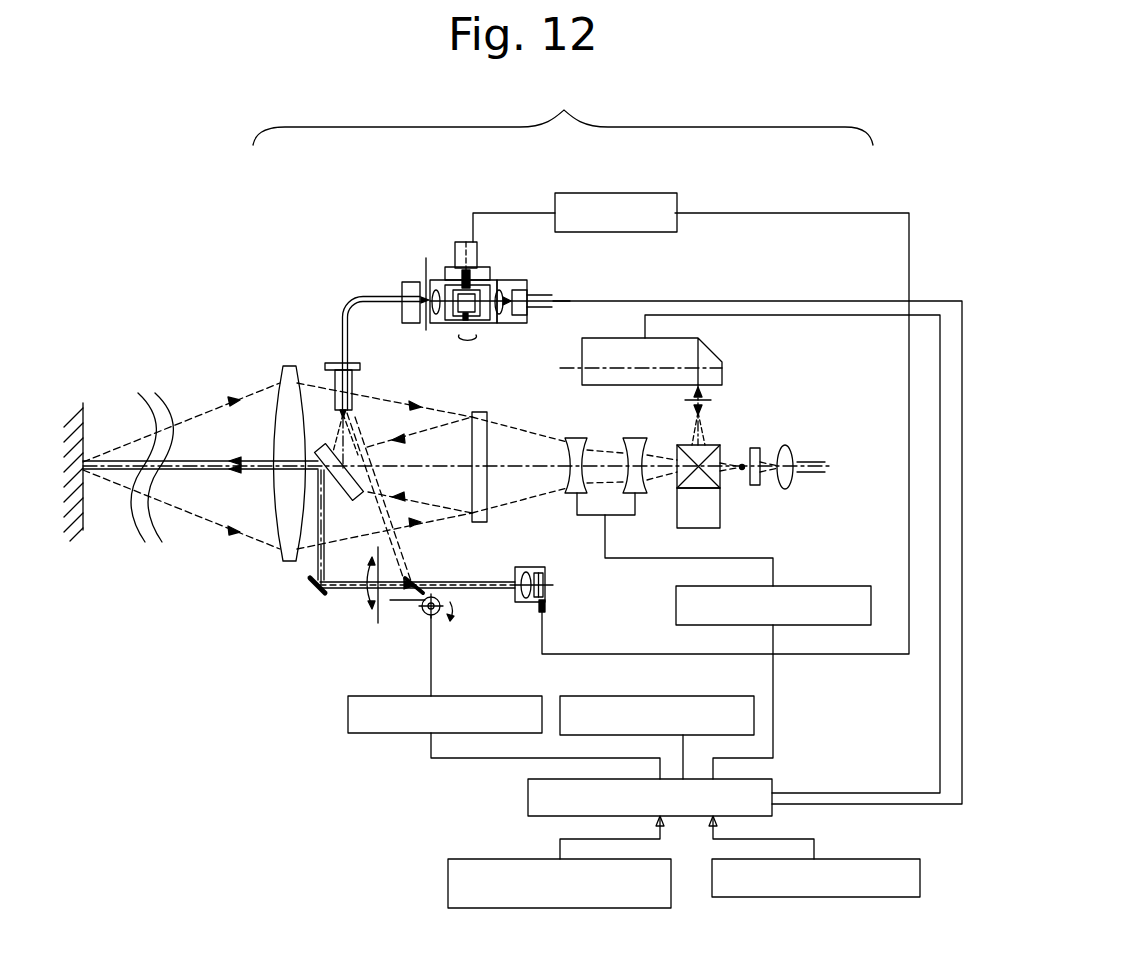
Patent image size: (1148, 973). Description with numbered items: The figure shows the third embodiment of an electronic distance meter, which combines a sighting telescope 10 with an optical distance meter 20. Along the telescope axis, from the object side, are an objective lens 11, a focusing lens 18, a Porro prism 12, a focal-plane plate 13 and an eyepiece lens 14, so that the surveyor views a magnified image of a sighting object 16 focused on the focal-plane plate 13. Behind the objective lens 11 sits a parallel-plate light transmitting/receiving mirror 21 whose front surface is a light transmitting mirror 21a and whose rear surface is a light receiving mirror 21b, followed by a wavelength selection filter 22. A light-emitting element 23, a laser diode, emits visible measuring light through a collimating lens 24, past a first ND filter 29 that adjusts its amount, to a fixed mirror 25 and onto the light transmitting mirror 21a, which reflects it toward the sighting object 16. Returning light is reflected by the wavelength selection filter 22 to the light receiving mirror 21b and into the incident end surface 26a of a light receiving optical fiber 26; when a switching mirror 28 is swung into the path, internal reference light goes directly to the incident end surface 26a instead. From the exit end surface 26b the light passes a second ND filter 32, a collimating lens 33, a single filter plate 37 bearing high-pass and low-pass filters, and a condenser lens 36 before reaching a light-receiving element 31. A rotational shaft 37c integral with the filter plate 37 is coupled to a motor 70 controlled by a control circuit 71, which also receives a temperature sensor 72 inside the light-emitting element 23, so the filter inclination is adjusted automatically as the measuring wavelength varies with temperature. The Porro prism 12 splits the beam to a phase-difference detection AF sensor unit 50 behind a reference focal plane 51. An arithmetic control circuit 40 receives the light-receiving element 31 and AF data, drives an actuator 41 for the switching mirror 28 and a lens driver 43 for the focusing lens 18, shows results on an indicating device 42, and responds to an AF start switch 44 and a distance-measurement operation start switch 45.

The sighting telescope 10 is at (563, 113).
The objective lens 11 is at (289, 365).
The Porro prism 12 is at (722, 455).
The focal-plane plate 13 is at (758, 452).
The eyepiece lens 14 is at (792, 447).
The sighting object 16 is at (86, 403).
The focusing lens 18 is at (570, 442).
The optical distance meter 20 is at (291, 303).
The light transmitting/receiving mirror 21 is at (357, 493).
The light transmitting mirror 21a is at (342, 490).
The light receiving mirror 21b is at (323, 445).
The wavelength selection filter 22 is at (479, 412).
The light-emitting element 23 is at (548, 570).
The collimating lens 24 is at (525, 567).
The fixed mirror 25 is at (312, 592).
The light receiving optical fiber 26 is at (350, 296).
The incident end surface 26a is at (352, 408).
The exit end surface 26b is at (403, 282).
The switching mirror 28 is at (420, 583).
The first ND filter 29 is at (376, 620).
The light-receiving element 31 is at (527, 288).
The second ND filter 32 is at (426, 258).
The collimating lens 33 is at (442, 323).
The condenser lens 36 is at (503, 323).
The filter plate 37 is at (477, 323).
The rotational shaft 37c is at (478, 268).
The arithmetic control circuit 40 is at (650, 785).
The actuator 41 is at (445, 701).
The indicating device 42 is at (657, 702).
The lens driver 43 is at (773, 591).
The AF start switch 44 is at (816, 864).
The distance-measurement operation start switch 45 is at (559, 870).
The phase-difference detection AF sensor unit 50 is at (641, 347).
The reference focal plane 51 is at (710, 400).
The motor 70 is at (466, 240).
The control circuit 71 is at (616, 198).
The temperature sensor 72 is at (546, 602).